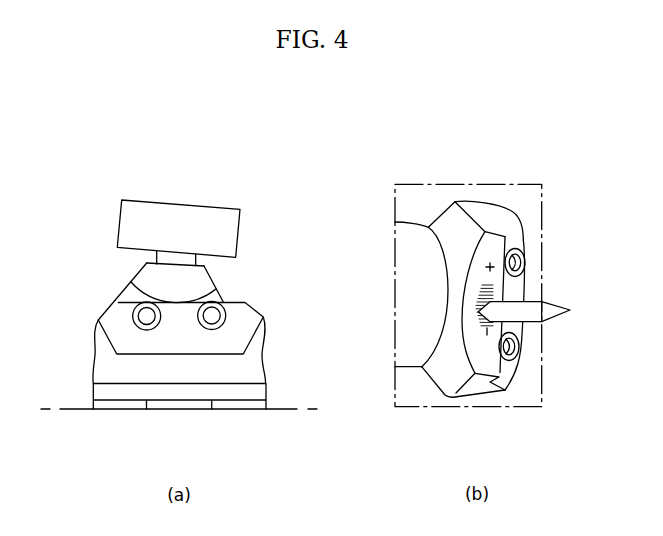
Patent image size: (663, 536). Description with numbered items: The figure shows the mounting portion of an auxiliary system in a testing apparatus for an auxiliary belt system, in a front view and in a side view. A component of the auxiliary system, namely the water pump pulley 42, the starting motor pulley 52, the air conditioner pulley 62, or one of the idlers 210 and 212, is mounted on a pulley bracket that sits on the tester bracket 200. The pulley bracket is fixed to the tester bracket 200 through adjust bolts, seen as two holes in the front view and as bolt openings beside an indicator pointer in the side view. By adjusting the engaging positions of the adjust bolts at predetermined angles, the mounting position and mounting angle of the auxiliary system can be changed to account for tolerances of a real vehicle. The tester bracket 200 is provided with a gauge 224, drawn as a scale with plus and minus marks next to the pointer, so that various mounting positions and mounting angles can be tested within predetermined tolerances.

The water pump pulley 42 is at (179, 199).
The starting motor pulley 52 is at (179, 199).
The air conditioner pulley 62 is at (179, 199).
The idler 210 is at (179, 199).
The idler 212 is at (178, 209).
The gauge 224 is at (477, 313).
The tester bracket 200 is at (70, 407).